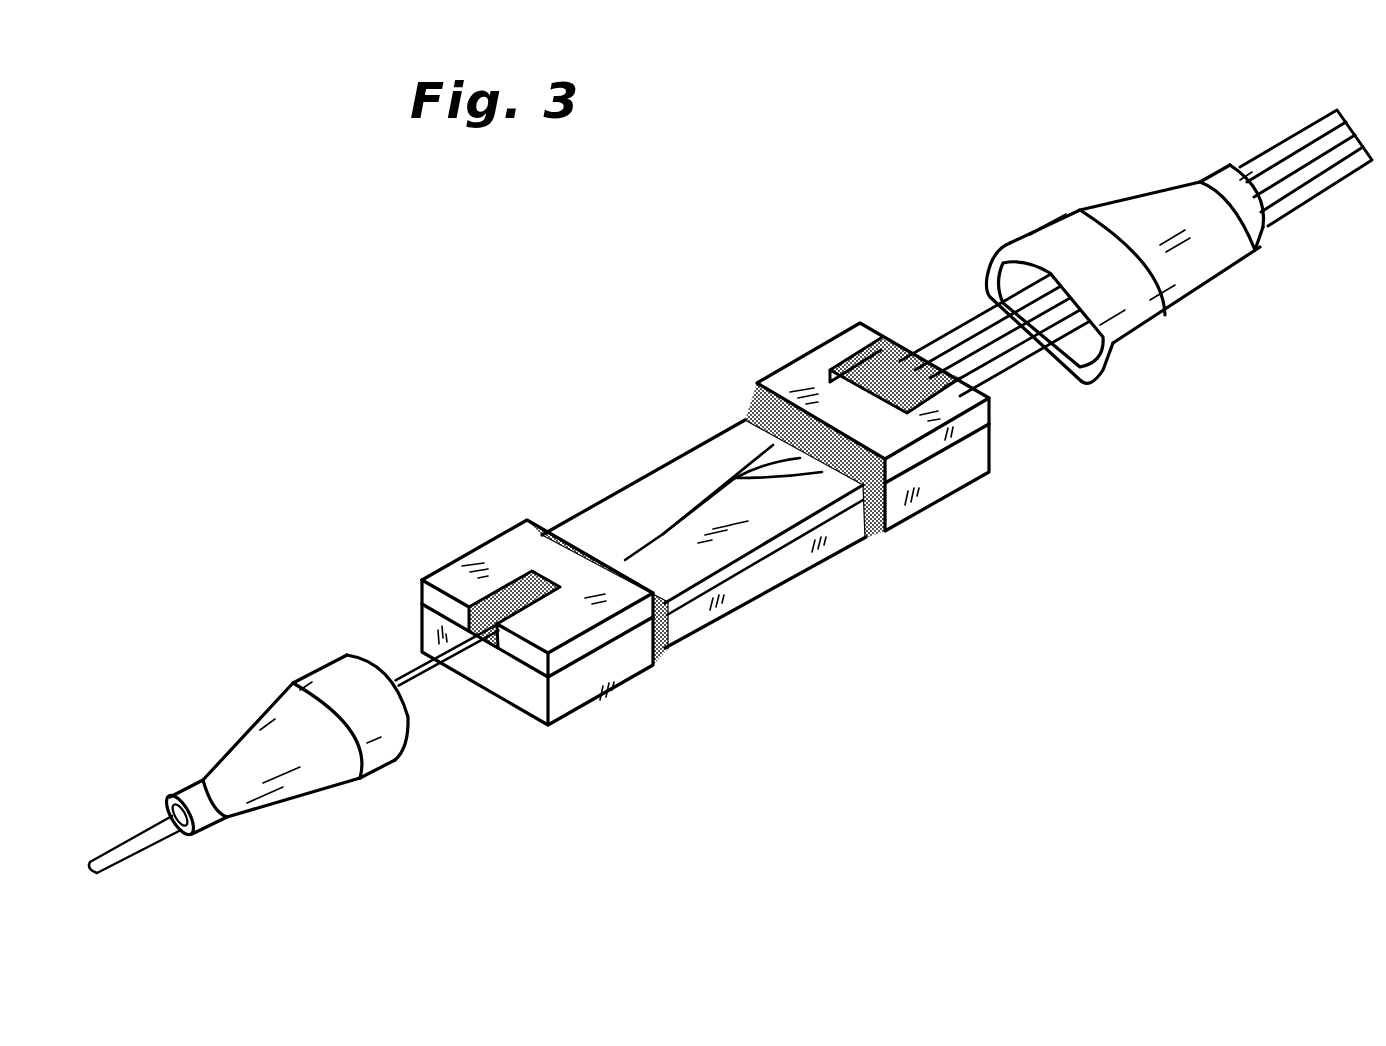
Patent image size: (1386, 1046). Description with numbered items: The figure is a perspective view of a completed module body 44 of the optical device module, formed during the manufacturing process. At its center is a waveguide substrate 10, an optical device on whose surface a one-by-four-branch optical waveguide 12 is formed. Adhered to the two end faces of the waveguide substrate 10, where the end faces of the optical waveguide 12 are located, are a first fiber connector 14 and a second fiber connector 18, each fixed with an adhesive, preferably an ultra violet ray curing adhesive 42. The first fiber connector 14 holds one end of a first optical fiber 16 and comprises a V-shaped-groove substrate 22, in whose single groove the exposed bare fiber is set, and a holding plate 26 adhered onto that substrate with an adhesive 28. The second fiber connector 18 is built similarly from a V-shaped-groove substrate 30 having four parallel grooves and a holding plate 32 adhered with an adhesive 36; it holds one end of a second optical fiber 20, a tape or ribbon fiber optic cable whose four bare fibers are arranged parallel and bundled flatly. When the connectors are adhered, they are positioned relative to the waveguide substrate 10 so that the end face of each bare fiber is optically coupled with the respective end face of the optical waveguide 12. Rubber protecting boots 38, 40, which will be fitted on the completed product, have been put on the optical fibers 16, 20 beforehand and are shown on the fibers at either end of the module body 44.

The waveguide substrate 10 is at (753, 580).
The optical waveguide 12 is at (702, 497).
The first fiber connector 14 is at (610, 693).
The first optical fiber 16 is at (413, 670).
The second fiber connector 18 is at (933, 507).
The second optical fiber 20 is at (1307, 127).
The V-shaped-groove substrate 22 is at (525, 695).
The holding plate 26 is at (458, 562).
The adhesive 28 is at (520, 570).
The V-shaped-groove substrate 30 is at (955, 462).
The holding plate 32 is at (815, 375).
The adhesive 36 is at (903, 360).
The rubber protecting boot 38 is at (327, 777).
The rubber protecting boot 40 is at (1153, 333).
The ultra violet ray curing adhesive 42 is at (743, 397).
The module body 44 is at (847, 572).